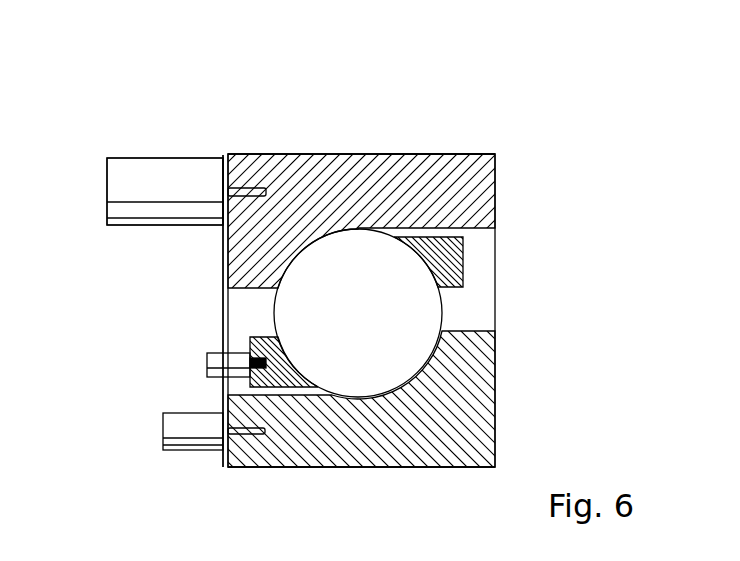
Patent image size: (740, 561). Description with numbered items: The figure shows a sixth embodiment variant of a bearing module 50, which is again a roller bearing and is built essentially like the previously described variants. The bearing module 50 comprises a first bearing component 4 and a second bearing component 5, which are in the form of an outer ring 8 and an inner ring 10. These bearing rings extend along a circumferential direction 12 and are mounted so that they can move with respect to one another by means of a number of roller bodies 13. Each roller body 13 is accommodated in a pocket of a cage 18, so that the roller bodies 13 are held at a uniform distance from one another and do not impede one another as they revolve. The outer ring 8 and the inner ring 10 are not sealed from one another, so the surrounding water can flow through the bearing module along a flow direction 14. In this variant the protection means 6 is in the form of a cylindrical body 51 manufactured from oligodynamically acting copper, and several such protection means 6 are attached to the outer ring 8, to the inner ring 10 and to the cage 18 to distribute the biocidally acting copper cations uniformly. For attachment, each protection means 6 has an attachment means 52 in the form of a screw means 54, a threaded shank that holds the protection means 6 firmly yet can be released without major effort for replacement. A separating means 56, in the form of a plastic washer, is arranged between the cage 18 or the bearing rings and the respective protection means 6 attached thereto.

The first bearing component 4 is at (345, 154).
The second bearing component 5 is at (399, 468).
The protection means 6 is at (130, 157).
The outer ring 8 is at (300, 168).
The inner ring 10 is at (331, 448).
The circumferential direction 12 is at (393, 152).
The roller bodies 13 is at (343, 324).
The flow direction 14 is at (108, 318).
The cage 18 is at (463, 258).
The bearing module 50 is at (516, 429).
The cylindrical body 51 is at (170, 172).
The attachment means 52 is at (246, 430).
The screw means 54 is at (241, 186).
The separating means 56 is at (250, 352).